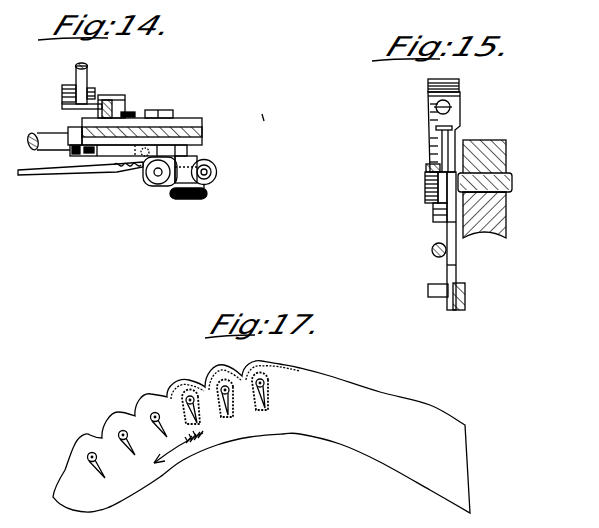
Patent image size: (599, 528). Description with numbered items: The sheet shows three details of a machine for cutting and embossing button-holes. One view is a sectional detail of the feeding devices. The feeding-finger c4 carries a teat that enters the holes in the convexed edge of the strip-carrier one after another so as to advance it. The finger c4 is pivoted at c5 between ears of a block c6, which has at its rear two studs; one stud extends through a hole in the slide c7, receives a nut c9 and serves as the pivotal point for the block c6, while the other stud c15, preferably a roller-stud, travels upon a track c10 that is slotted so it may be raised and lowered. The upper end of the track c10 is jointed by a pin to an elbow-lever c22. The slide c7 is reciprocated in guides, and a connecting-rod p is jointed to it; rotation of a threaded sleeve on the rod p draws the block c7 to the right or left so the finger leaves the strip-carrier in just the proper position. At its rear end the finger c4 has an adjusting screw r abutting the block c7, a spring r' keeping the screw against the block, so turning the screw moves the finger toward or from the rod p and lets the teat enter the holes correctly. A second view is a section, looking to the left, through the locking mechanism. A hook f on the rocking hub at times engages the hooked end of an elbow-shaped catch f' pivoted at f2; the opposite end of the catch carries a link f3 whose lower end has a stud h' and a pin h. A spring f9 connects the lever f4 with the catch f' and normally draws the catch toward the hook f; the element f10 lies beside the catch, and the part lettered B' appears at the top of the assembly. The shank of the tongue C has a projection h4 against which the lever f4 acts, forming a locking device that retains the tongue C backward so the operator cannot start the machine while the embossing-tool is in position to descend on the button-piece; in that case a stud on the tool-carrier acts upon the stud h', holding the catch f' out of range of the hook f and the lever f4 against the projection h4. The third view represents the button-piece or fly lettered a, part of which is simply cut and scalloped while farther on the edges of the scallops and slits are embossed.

In FIG. 14, the elbow-lever c22 is at (88, 72).
In FIG. 14, the track c10 is at (62, 107).
In FIG. 14, the roller-stud c15 is at (125, 97).
In FIG. 14, the nut c9 is at (173, 115).
In FIG. 14, the slide c7 is at (202, 123).
In FIG. 14, the connecting-rod p is at (48, 145).
In FIG. 14, the feeding-finger c4 is at (52, 176).
In FIG. 14, the spring r' is at (119, 182).
In FIG. 14, the pivot c5 is at (160, 175).
In FIG. 14, the block c6 is at (168, 186).
In FIG. 14, the adjusting screw r is at (201, 190).
In FIG. 15, the head cap B' is at (423, 92).
In FIG. 15, the hook f is at (451, 132).
In FIG. 15, the elbow-shaped catch f' is at (461, 213).
In FIG. 15, the tongue C is at (494, 166).
In FIG. 15, the projection h4 is at (512, 177).
In FIG. 15, the lever f4 is at (452, 203).
In FIG. 15, the spring f9 is at (427, 176).
In FIG. 15, the slide block f10 is at (433, 210).
In FIG. 15, the pivot f2 is at (436, 223).
In FIG. 15, the stud h' is at (423, 255).
In FIG. 15, the link f3 is at (450, 268).
In FIG. 15, the pin h is at (434, 300).
In FIG. 17, the scalloped fabric strip a is at (261, 437).